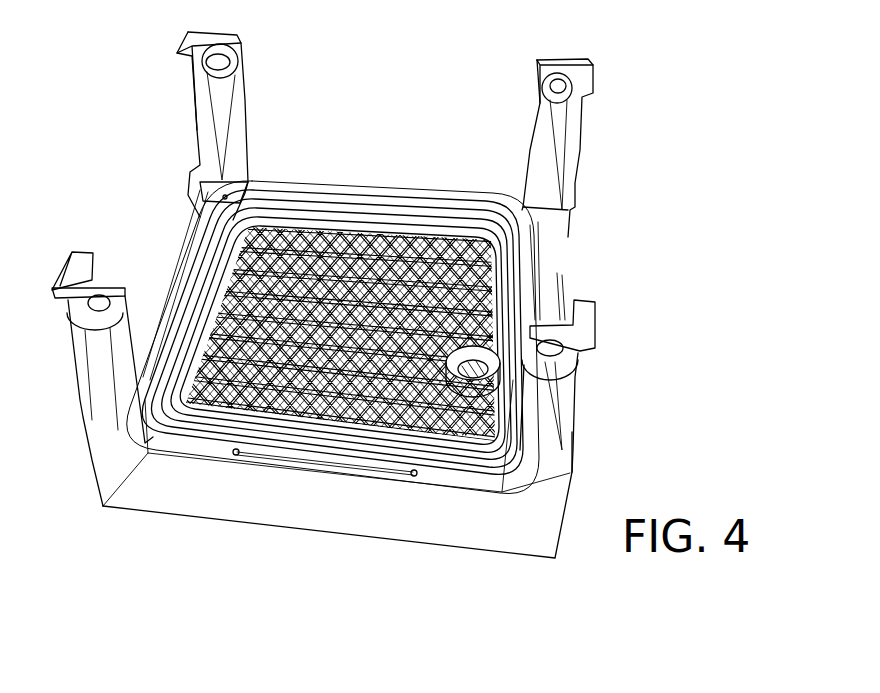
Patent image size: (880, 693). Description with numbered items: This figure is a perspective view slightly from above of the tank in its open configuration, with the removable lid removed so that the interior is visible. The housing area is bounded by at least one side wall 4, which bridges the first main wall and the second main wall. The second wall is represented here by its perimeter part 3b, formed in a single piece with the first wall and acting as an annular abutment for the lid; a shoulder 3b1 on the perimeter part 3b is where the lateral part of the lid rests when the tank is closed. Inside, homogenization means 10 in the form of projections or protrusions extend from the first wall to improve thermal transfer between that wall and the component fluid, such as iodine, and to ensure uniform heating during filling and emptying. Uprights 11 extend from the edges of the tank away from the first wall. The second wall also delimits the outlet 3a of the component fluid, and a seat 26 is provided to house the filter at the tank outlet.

The homogenization means 10 is at (368, 245).
The uprights 11 is at (578, 133).
The perimeter part 3b is at (190, 282).
The outlet 3a is at (508, 325).
The seat 26 is at (486, 377).
The shoulder 3b1 is at (184, 420).
The side wall 4 is at (500, 537).